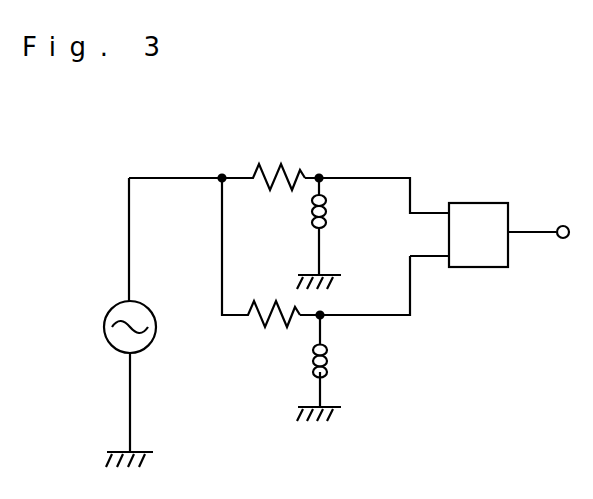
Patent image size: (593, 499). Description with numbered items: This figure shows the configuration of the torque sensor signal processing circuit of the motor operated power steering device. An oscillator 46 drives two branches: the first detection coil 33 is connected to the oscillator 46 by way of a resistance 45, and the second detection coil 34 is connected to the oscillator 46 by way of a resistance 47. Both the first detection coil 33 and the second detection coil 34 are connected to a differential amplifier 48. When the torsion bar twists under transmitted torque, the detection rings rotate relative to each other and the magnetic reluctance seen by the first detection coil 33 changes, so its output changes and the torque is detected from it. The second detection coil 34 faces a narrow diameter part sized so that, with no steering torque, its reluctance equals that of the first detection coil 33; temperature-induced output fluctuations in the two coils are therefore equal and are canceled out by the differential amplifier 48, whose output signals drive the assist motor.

The first detection coil 33 is at (318, 230).
The second detection coil 34 is at (318, 372).
The resistance 45 is at (298, 173).
The oscillator 46 is at (105, 322).
The resistance 47 is at (254, 322).
The differential amplifier 48 is at (482, 260).